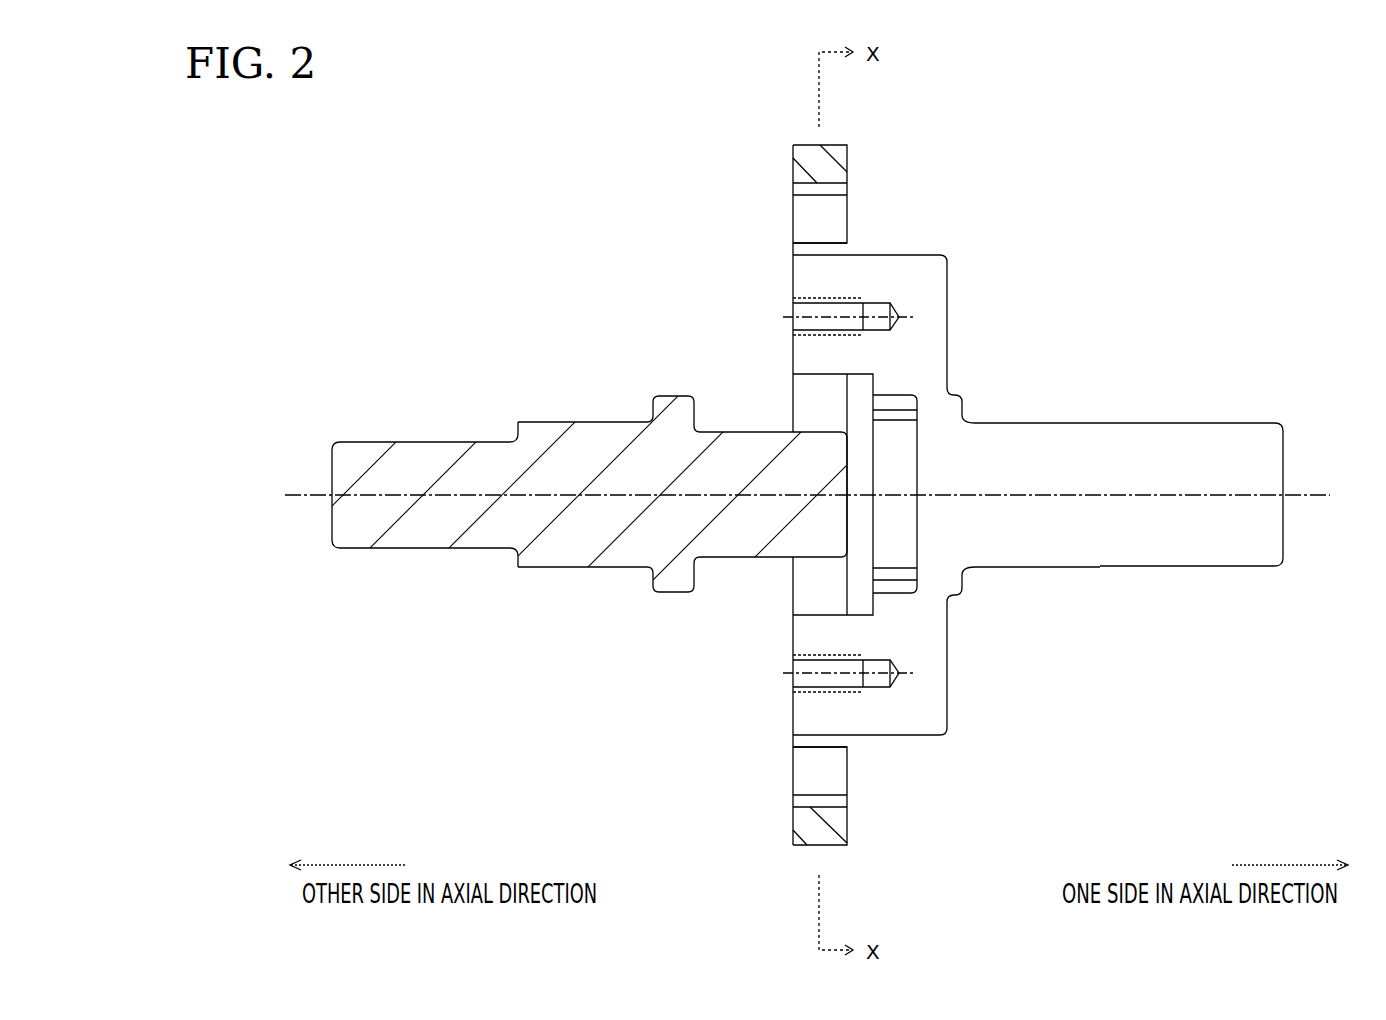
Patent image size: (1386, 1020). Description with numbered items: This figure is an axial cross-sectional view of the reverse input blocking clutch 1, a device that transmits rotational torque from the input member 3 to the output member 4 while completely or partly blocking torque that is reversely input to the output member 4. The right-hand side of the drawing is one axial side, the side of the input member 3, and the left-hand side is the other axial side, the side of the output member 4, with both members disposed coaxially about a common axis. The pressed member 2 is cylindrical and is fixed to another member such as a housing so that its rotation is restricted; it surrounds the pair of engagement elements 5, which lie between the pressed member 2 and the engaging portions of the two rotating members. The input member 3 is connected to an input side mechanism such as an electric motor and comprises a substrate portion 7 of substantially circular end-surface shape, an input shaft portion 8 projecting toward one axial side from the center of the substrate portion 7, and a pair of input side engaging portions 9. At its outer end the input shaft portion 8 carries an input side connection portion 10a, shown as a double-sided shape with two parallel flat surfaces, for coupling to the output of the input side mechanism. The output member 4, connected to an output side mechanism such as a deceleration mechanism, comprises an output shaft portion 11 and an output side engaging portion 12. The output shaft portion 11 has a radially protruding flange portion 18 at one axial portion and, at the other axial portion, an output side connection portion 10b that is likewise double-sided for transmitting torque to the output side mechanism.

The reverse input blocking clutch 1 is at (966, 205).
The pressed member 2 is at (804, 820).
The input member 3 is at (1227, 550).
The output member 4 is at (412, 540).
The engagement elements 5 is at (804, 218).
The substrate portion 7 is at (928, 331).
The input shaft portion 8 is at (1022, 437).
The input side engaging portions 9 is at (857, 290).
The input side connection portion 10a is at (1193, 473).
The output side connection portion 10b is at (428, 455).
The output shaft portion 11 is at (582, 548).
The output side engaging portion 12 is at (738, 452).
The flange portion 18 is at (675, 583).